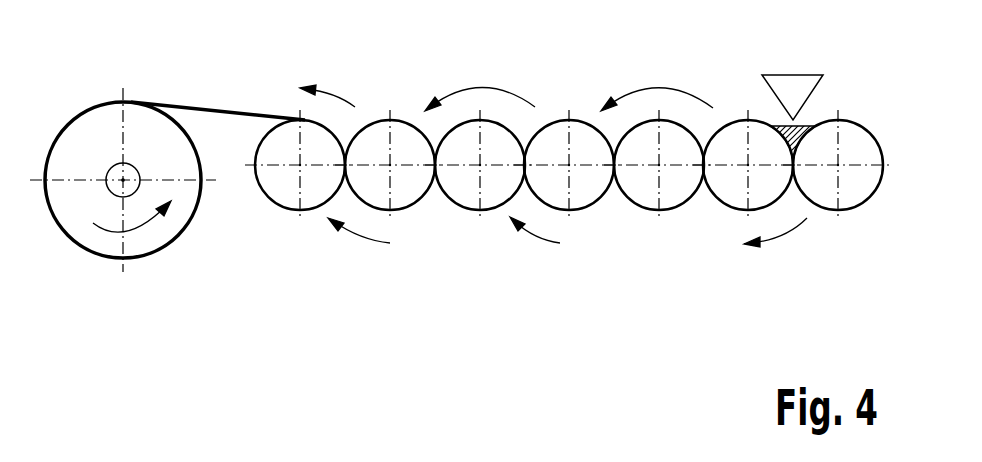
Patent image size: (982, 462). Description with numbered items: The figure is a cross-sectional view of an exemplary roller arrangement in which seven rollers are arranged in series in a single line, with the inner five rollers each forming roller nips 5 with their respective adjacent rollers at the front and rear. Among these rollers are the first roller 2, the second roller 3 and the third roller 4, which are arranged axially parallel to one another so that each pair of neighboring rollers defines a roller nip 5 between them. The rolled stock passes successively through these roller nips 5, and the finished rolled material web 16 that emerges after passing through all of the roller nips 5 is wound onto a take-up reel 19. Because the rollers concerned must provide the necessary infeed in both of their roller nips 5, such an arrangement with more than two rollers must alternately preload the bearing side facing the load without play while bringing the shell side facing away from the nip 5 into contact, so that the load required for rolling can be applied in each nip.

The first roller 2 is at (855, 185).
The second roller 3 is at (733, 185).
The third roller 4 is at (643, 185).
The roller nip 5 is at (614, 140).
The rolled material web 16 is at (220, 112).
The take-up reel 19 is at (83, 218).